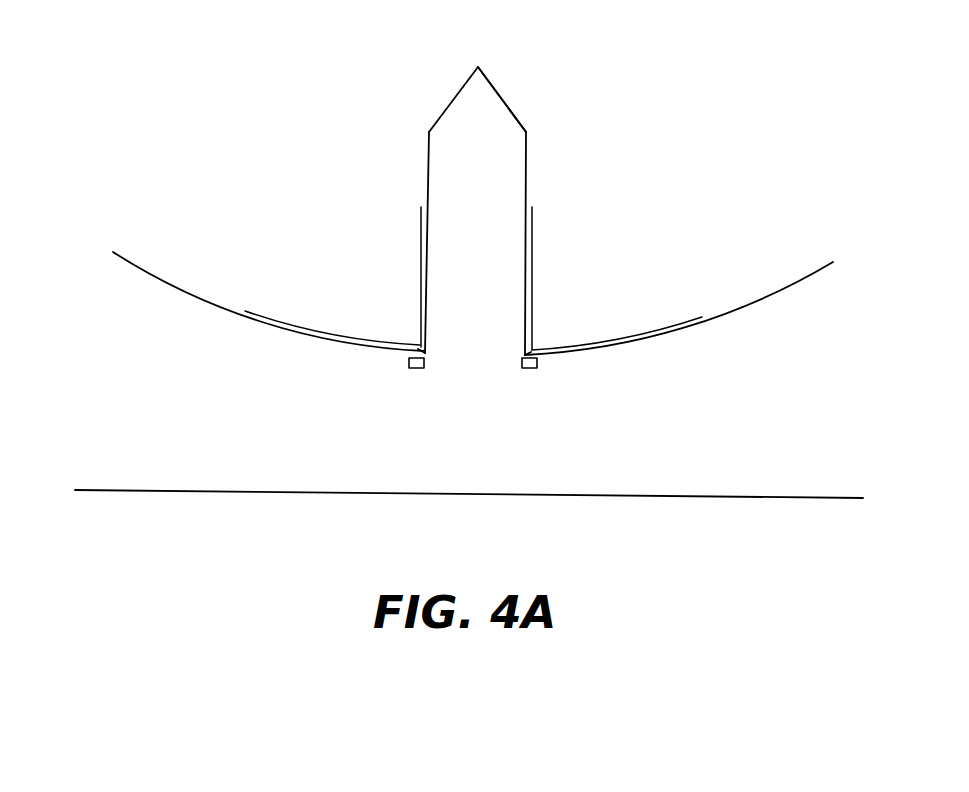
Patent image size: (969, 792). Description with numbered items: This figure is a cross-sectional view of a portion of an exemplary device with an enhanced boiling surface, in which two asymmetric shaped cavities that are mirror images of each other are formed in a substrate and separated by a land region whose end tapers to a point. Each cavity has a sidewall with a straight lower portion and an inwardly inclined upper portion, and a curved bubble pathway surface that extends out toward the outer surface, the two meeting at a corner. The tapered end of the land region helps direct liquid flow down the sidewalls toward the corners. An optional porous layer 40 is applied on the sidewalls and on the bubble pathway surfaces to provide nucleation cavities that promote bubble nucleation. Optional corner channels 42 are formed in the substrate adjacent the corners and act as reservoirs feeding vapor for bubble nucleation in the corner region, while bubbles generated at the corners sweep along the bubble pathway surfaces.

The porous layer 40 is at (415, 247).
The corner channels 42 is at (407, 372).